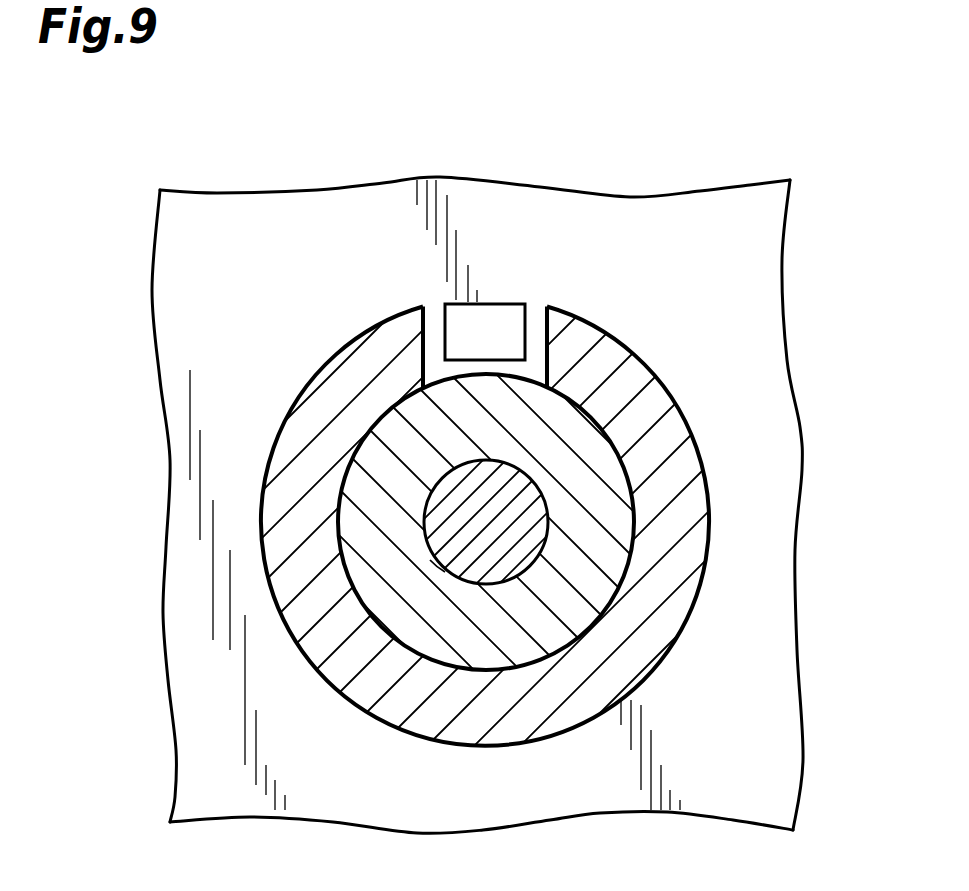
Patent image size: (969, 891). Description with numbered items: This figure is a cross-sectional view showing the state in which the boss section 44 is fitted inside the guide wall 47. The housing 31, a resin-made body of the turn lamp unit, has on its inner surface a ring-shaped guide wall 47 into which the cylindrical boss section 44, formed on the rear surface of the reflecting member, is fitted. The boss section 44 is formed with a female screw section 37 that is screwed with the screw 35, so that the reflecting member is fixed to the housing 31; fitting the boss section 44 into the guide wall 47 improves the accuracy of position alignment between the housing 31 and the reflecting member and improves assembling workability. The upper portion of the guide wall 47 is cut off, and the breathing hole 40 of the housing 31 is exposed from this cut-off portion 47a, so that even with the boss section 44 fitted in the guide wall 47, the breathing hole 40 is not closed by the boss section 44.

The housing 31 is at (757, 263).
The guide wall 47 is at (660, 430).
The cut-off portion 47a is at (533, 333).
The boss section 44 is at (573, 577).
The screw 35 is at (483, 543).
The female screw section 37 is at (435, 563).
The breathing hole 40 is at (487, 333).